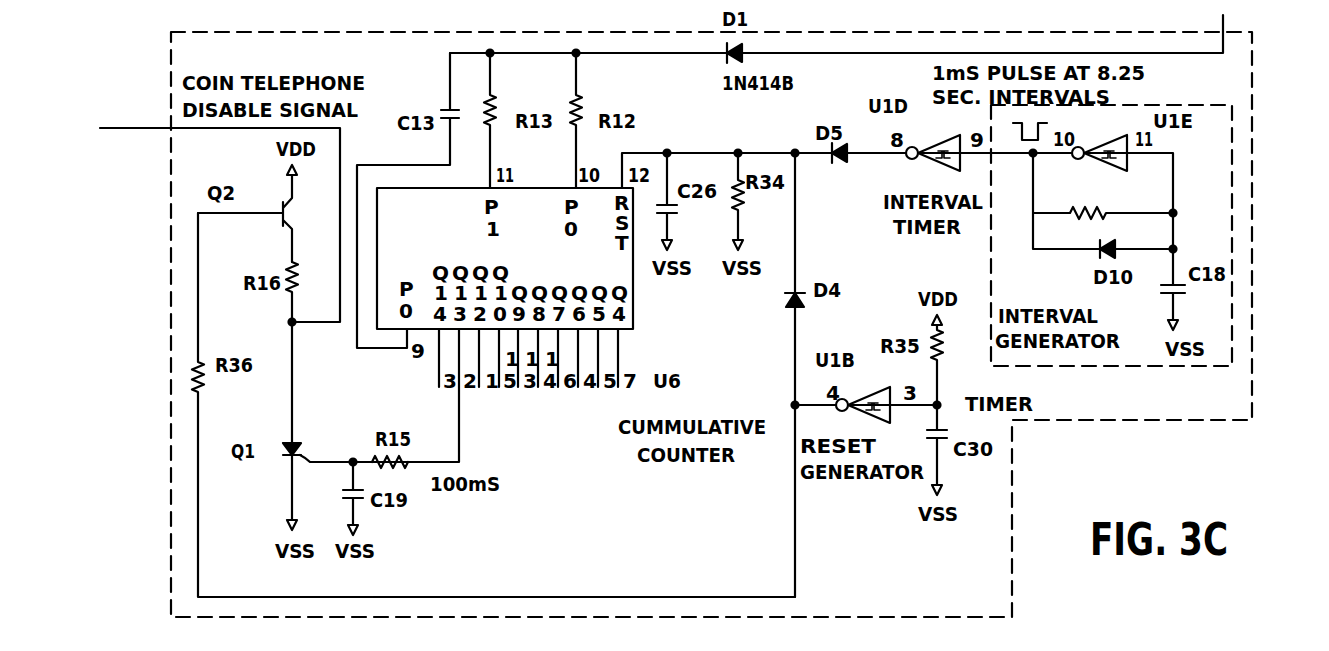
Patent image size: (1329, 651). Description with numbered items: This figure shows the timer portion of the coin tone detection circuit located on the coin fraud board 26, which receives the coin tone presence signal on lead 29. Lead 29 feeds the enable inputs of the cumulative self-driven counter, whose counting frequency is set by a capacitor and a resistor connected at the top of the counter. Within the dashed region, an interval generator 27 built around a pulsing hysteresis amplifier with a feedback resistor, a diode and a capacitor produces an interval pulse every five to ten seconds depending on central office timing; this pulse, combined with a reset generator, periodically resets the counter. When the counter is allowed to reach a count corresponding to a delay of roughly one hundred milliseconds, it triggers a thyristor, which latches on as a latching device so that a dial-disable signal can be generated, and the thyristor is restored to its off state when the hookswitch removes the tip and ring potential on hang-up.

The coin fraud board 26 is at (1243, 386).
The interval generator 27 is at (1117, 358).
The lead 29 is at (1220, 27).